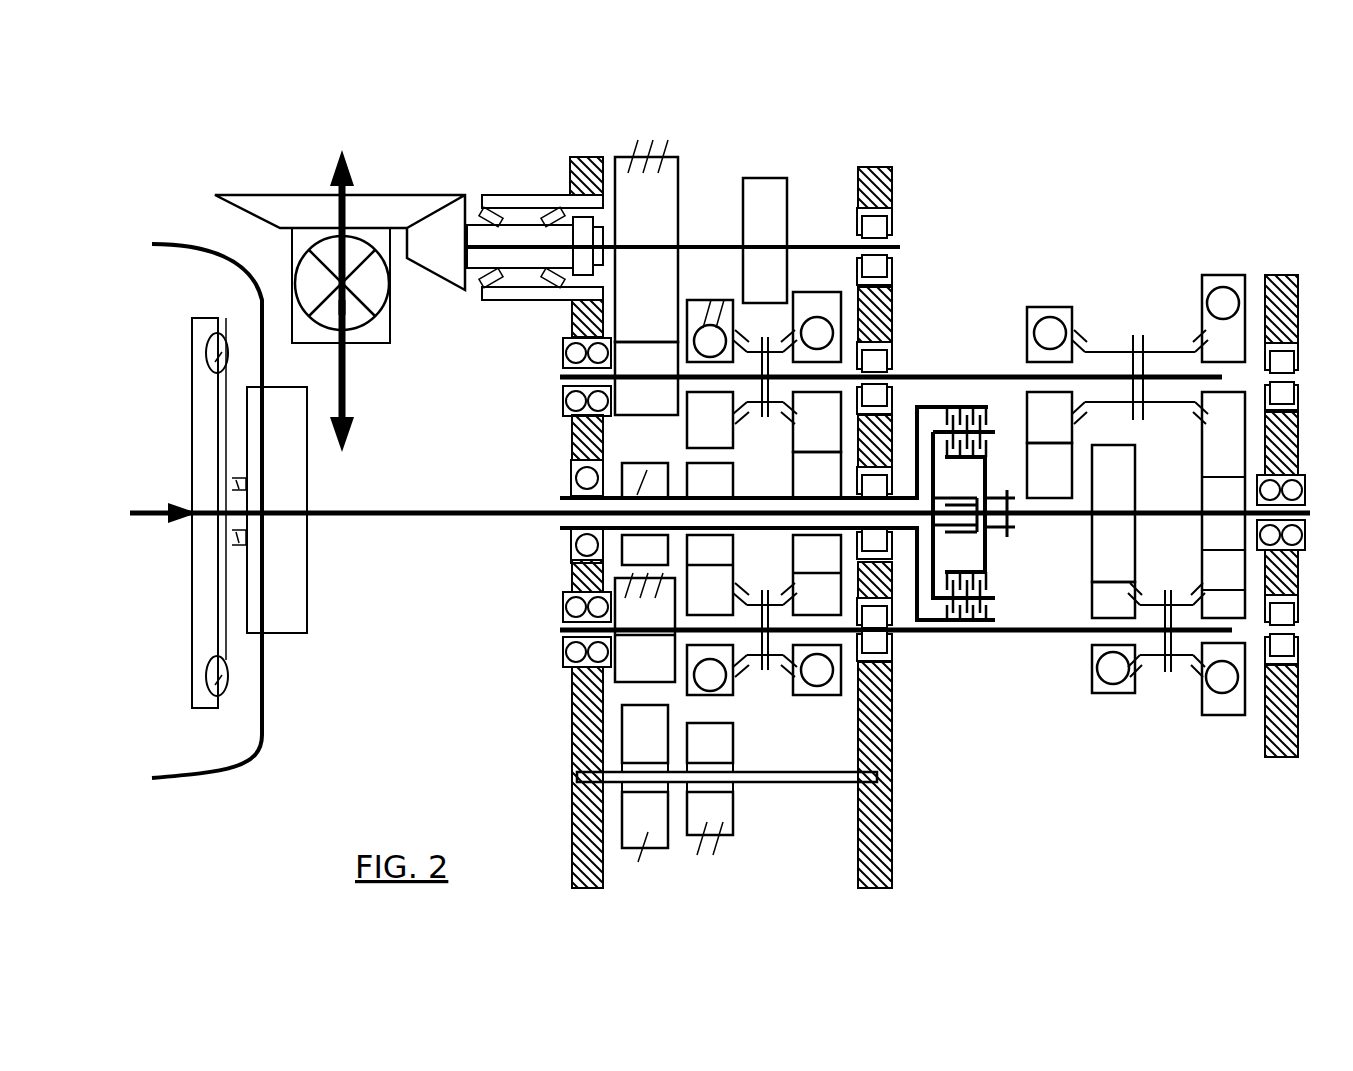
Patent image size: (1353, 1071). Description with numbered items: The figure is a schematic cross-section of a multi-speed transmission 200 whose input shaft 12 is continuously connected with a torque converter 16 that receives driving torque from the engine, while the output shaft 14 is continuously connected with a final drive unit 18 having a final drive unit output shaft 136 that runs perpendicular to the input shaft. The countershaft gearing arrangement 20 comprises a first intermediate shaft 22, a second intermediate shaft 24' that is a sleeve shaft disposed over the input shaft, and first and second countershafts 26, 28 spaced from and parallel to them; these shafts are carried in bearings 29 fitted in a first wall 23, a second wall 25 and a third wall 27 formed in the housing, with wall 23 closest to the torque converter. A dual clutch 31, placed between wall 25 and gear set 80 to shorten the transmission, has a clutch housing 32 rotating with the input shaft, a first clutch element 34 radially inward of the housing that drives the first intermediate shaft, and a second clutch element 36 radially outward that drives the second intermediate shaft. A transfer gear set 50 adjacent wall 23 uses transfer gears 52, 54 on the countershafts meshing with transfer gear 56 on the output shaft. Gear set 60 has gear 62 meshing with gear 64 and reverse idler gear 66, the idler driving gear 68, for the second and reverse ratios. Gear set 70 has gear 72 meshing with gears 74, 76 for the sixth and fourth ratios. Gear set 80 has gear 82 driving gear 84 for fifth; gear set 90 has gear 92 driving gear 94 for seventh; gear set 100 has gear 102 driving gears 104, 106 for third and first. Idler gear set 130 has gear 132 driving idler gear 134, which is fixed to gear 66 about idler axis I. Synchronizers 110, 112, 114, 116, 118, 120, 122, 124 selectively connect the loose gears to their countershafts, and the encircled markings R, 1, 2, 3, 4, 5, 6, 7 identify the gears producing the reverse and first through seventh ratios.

The multi-speed transmission 200 is at (200, 212).
The input shaft 12 is at (393, 515).
The output shaft 14 is at (810, 248).
The torque converter 16 is at (215, 627).
The final drive unit 18 is at (405, 170).
The countershaft gearing arrangement 20 is at (962, 185).
The first intermediate shaft 22 is at (1192, 511).
The first wall 23 is at (572, 735).
The second intermediate shaft 24' is at (761, 513).
The second wall 25 is at (892, 845).
The first countershaft 26 is at (1020, 632).
The third wall 27 is at (1298, 735).
The second countershaft 28 is at (995, 375).
The bearings 29 is at (563, 402).
The dual clutch 31 is at (1008, 560).
The clutch housing 32 is at (970, 622).
The first clutch element 34 is at (995, 585).
The second clutch element 36 is at (978, 407).
The transfer gear set 50 is at (652, 128).
The transfer gear 52 is at (646, 378).
The transfer gear 54 is at (645, 627).
The transfer gear 56 is at (646, 241).
The gear set 60 is at (718, 860).
The gear 62 is at (710, 480).
The gear 64 is at (710, 575).
The reverse idler gear 66 is at (710, 747).
The gear 68 is at (710, 420).
The gear set 70 is at (826, 702).
The gear 72 is at (817, 475).
The gear 74 is at (817, 575).
The gear 76 is at (817, 422).
The gear set 80 is at (1060, 300).
The gear 82 is at (1049, 470).
The gear 84 is at (1049, 417).
The gear set 90 is at (1115, 712).
The gear 92 is at (1113, 513).
The gear 94 is at (1113, 600).
The gear set 100 is at (1225, 722).
The gear 102 is at (1223, 505).
The gear 104 is at (1222, 575).
The gear 106 is at (1222, 343).
The synchronizer 110 is at (743, 668).
The synchronizer 112 is at (777, 598).
The synchronizer 114 is at (742, 405).
The synchronizer 116 is at (772, 338).
The synchronizer 118 is at (1152, 665).
The synchronizer 120 is at (1187, 600).
The synchronizer 122 is at (1097, 412).
The synchronizer 124 is at (1185, 350).
The idler gear set 130 is at (648, 860).
The gear 132 is at (645, 550).
The idler gear 134 is at (645, 738).
The final drive unit output shaft 136 is at (346, 363).
The idler axis I is at (760, 783).
The reverse gear R is at (710, 331).
The first speed gear 1 is at (1223, 318).
The second speed gear 2 is at (710, 670).
The third speed gear 3 is at (1223, 679).
The fourth speed gear 4 is at (817, 327).
The fifth speed gear 5 is at (1049, 334).
The sixth speed gear 6 is at (817, 670).
The seventh speed gear 7 is at (1113, 669).